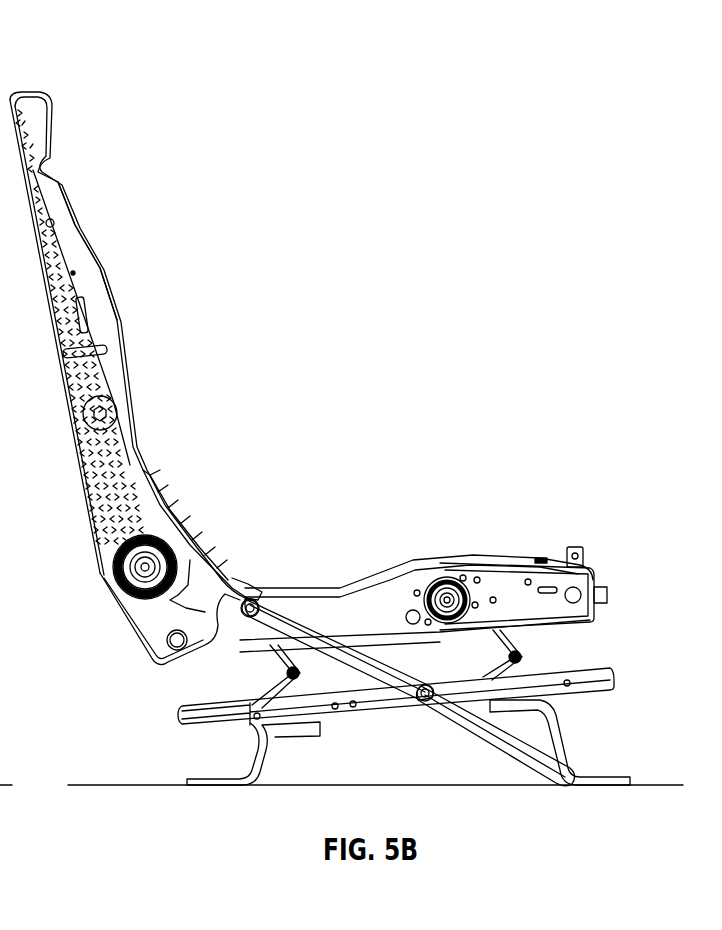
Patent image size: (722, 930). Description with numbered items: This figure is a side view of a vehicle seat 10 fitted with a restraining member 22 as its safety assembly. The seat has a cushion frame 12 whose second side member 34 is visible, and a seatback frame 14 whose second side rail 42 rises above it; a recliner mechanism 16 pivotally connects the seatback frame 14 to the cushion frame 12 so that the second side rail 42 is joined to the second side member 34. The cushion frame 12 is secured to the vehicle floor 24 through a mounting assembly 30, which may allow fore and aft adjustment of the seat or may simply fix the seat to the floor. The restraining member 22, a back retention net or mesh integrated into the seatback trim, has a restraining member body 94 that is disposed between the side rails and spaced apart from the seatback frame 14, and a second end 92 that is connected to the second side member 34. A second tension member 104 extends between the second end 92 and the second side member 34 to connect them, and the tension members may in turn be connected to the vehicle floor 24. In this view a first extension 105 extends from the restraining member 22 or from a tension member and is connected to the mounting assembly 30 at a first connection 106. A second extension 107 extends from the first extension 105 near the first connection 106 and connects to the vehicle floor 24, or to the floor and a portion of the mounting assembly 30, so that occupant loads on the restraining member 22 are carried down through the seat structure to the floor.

The vehicle seat 10 is at (512, 182).
The cushion frame 12 is at (595, 561).
The seatback frame 14 is at (62, 173).
The recliner mechanism 16 is at (138, 603).
The restraining member 22 is at (73, 463).
The vehicle floor 24 is at (657, 785).
The mounting assembly 30 is at (595, 658).
The second side member 34 is at (293, 610).
The second side rail 42 is at (78, 248).
The second end 92 is at (227, 563).
The restraining member body 94 is at (60, 350).
The second tension member 104 is at (240, 609).
The first extension 105 is at (383, 673).
The first connection 106 is at (427, 702).
The second extension 107 is at (500, 737).